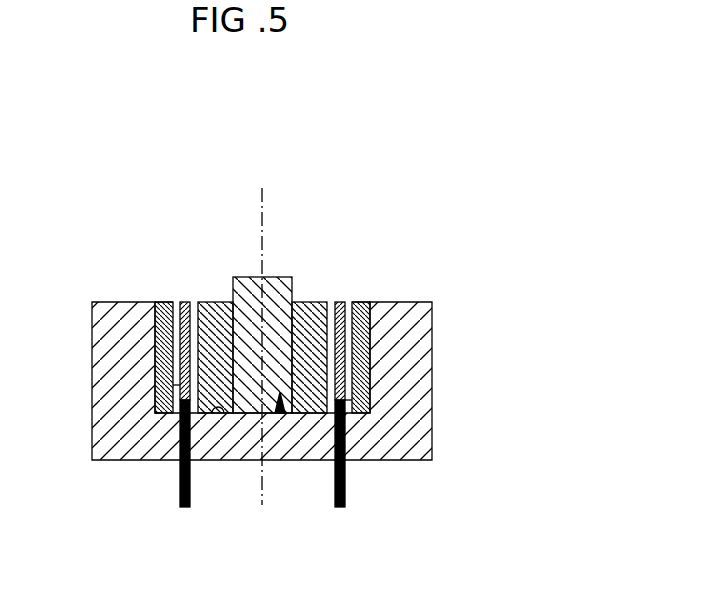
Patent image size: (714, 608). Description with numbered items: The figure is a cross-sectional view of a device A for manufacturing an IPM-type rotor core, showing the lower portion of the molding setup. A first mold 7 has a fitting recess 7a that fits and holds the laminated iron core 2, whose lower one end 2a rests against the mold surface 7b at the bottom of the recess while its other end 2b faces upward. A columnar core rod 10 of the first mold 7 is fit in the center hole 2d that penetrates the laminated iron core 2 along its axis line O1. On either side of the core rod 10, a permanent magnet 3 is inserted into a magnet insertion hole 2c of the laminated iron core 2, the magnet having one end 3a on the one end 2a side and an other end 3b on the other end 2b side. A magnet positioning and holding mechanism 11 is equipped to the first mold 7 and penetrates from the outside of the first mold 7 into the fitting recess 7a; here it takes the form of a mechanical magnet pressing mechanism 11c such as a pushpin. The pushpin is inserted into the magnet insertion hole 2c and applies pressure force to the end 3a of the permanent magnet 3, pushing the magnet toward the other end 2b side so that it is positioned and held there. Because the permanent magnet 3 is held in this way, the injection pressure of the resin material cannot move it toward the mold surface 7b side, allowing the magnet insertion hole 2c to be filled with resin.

The device for manufacturing the rotor core A is at (548, 176).
The first mold 7 is at (436, 435).
The fitting recess 7a is at (280, 414).
The mold surface 7b is at (218, 413).
The laminated iron core 2 is at (168, 350).
The one end of the laminated iron core 2a is at (160, 413).
The other end of the laminated iron core 2b is at (222, 302).
The magnet insertion hole 2c is at (177, 302).
The center hole 2d is at (278, 277).
The core rod 10 is at (291, 301).
The permanent magnet 3 is at (217, 294).
The one end of the permanent magnet 3a is at (180, 385).
The other end of the permanent magnet 3b is at (186, 302).
The magnet positioning and holding mechanism 11 is at (292, 488).
The mechanical magnet pressing mechanism 11c is at (187, 510).
The axis line O1 is at (261, 332).